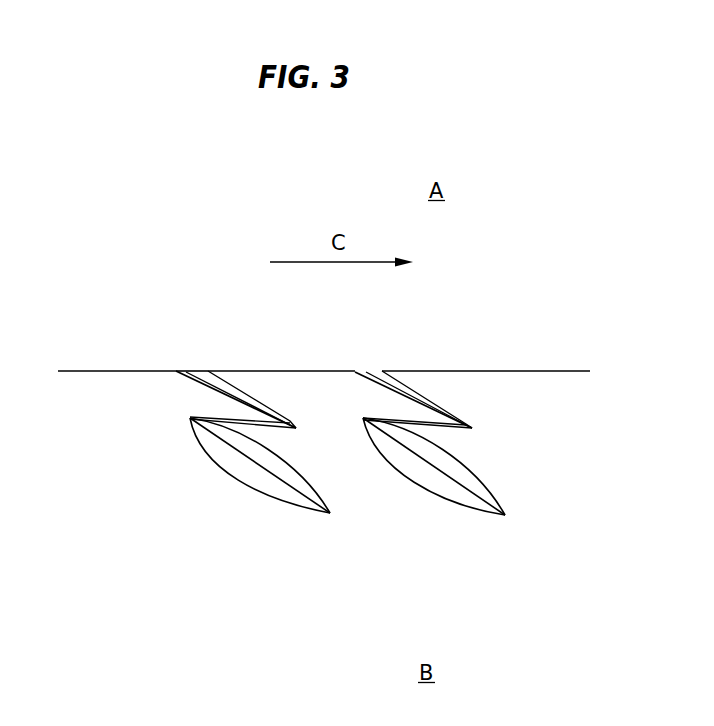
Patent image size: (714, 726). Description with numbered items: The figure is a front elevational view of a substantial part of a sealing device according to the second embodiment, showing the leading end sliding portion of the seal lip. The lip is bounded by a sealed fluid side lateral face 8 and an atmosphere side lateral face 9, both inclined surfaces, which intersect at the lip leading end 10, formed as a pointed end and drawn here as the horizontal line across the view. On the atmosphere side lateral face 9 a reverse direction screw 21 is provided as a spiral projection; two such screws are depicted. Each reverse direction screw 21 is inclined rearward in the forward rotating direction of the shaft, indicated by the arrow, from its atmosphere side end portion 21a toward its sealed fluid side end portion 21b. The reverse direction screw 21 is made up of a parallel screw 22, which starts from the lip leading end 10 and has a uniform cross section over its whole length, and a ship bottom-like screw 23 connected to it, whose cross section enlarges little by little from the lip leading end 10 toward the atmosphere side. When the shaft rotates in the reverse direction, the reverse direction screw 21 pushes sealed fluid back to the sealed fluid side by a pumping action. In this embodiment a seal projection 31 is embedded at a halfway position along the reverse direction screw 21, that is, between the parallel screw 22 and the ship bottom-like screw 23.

The sealed fluid side lateral face 8 is at (68, 360).
The atmosphere side lateral face 9 is at (68, 381).
The lip leading end 10 is at (516, 371).
The reverse direction screw 21 is at (338, 454).
The atmosphere side end portion 21a is at (330, 514).
The sealed fluid side end portion 21b is at (197, 373).
The parallel screw 22 is at (245, 390).
The ship bottom-like screw 23 is at (262, 482).
The seal projection 31 is at (250, 441).